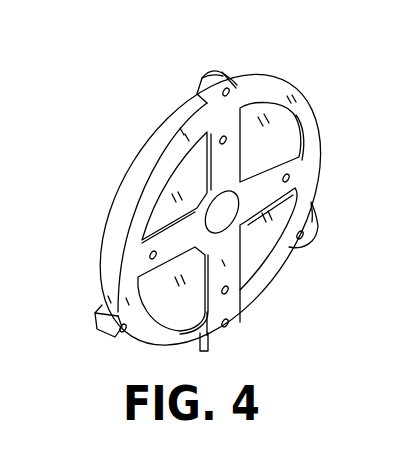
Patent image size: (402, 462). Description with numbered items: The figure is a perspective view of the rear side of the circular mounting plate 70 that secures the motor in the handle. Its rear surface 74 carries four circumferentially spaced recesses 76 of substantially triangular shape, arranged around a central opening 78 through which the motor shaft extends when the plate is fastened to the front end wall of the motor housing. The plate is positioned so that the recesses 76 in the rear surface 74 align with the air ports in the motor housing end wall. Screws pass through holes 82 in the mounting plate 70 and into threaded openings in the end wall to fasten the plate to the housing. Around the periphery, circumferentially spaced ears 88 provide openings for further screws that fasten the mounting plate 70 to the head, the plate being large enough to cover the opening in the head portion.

The mounting plate 70 is at (291, 75).
The rear surface 74 is at (139, 214).
The recesses 76 is at (162, 164).
The central opening 78 is at (235, 192).
The holes 82 is at (289, 177).
The ears 88 is at (204, 78).